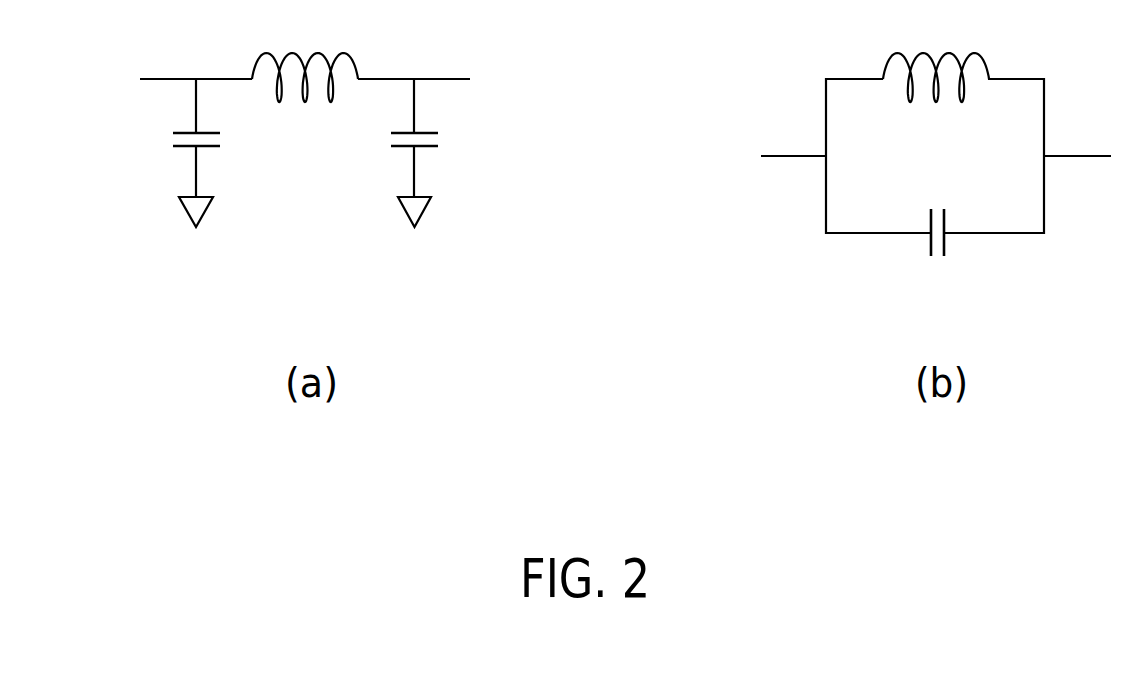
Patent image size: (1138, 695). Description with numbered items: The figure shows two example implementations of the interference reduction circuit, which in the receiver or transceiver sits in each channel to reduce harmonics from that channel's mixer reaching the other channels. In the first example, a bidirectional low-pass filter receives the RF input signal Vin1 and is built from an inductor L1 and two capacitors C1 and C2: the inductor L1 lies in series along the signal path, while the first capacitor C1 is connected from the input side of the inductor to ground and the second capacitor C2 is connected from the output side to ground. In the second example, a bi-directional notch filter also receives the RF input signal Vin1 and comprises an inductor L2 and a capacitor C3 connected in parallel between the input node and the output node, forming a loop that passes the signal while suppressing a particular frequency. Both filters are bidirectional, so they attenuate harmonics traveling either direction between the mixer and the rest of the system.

The RF input signal Vin1 is at (450, 113).
The inductor L1 is at (305, 56).
The capacitor C1 is at (175, 153).
The capacitor C2 is at (436, 153).
The inductor L2 is at (936, 56).
The capacitor C3 is at (938, 251).